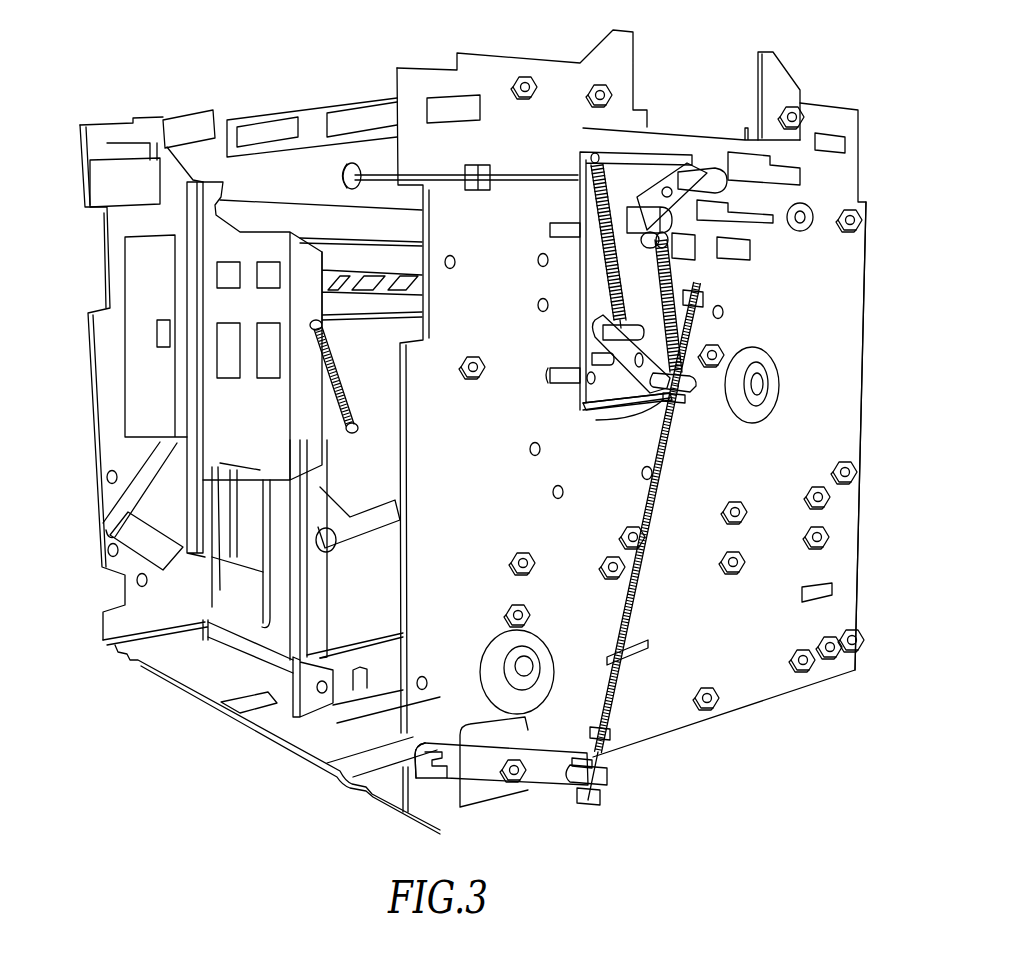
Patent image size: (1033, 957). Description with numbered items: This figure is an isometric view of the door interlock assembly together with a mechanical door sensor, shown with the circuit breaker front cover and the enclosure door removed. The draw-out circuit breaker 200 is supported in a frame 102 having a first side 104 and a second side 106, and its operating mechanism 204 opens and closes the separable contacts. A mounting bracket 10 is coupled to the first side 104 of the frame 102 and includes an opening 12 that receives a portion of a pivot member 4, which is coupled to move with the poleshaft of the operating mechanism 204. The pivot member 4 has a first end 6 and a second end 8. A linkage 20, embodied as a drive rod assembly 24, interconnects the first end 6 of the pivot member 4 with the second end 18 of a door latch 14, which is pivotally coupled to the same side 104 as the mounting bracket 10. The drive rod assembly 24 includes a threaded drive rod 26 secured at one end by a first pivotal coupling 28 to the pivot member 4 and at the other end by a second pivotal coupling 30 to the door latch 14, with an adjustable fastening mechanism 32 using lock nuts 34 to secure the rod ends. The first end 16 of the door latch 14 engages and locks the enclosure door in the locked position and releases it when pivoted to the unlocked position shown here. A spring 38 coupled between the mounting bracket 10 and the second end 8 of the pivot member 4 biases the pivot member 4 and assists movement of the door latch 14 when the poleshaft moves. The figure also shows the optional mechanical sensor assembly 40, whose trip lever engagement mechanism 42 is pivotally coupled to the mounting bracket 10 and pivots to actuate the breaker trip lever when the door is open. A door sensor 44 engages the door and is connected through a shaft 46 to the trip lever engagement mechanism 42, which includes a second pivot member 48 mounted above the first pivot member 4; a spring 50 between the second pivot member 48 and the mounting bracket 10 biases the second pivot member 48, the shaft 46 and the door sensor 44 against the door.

The pivot member 4 is at (590, 408).
The first end 6 is at (658, 340).
The second end 8 is at (580, 342).
The mounting bracket 10 is at (588, 316).
The opening 12 is at (578, 386).
The door latch 14 is at (488, 775).
The first end 16 is at (442, 745).
The second end 18 is at (578, 745).
The linkage 20 is at (660, 498).
The drive rod assembly 24 is at (722, 411).
The threaded drive rod 26 is at (670, 430).
The first pivotal coupling 28 is at (663, 406).
The second pivotal coupling 30 is at (610, 786).
The adjustable fastening mechanism 32 is at (710, 330).
The lock nuts 34 is at (705, 302).
The spring 38 is at (610, 262).
The mechanical sensor assembly 40 is at (537, 195).
The trip lever engagement mechanism 42 is at (683, 143).
The door sensor 44 is at (340, 176).
The shaft 46 is at (506, 178).
The second pivot member 48 is at (663, 200).
The spring 50 is at (672, 255).
The frame 102 is at (752, 670).
The first side 104 is at (857, 605).
The second side 106 is at (104, 525).
The draw-out circuit breaker 200 is at (160, 622).
The operating mechanism 204 is at (215, 412).